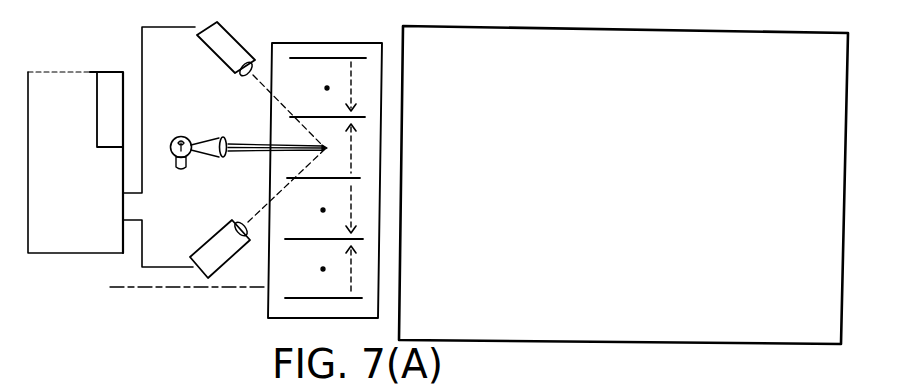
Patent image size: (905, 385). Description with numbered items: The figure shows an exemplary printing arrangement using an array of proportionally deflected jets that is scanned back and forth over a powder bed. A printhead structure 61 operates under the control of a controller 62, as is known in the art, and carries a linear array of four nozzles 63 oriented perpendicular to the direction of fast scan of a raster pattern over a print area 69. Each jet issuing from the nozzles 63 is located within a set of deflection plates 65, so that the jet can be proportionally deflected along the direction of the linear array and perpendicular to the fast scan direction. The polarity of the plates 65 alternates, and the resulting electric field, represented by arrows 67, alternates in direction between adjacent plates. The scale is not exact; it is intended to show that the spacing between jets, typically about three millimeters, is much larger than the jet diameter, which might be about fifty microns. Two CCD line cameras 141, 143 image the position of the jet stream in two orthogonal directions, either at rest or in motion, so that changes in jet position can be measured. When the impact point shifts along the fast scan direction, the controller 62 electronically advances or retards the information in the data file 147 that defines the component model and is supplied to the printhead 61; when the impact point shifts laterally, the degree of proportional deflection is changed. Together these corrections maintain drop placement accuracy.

The printhead structure 61 is at (268, 298).
The controller 62 is at (72, 256).
The nozzles 63 is at (323, 270).
The deflection plates 65 is at (323, 56).
The arrows 67 is at (349, 280).
The print area 69 is at (778, 345).
The CCD line camera 141 is at (218, 55).
The CCD line camera 143 is at (221, 233).
The data file 147 is at (110, 75).